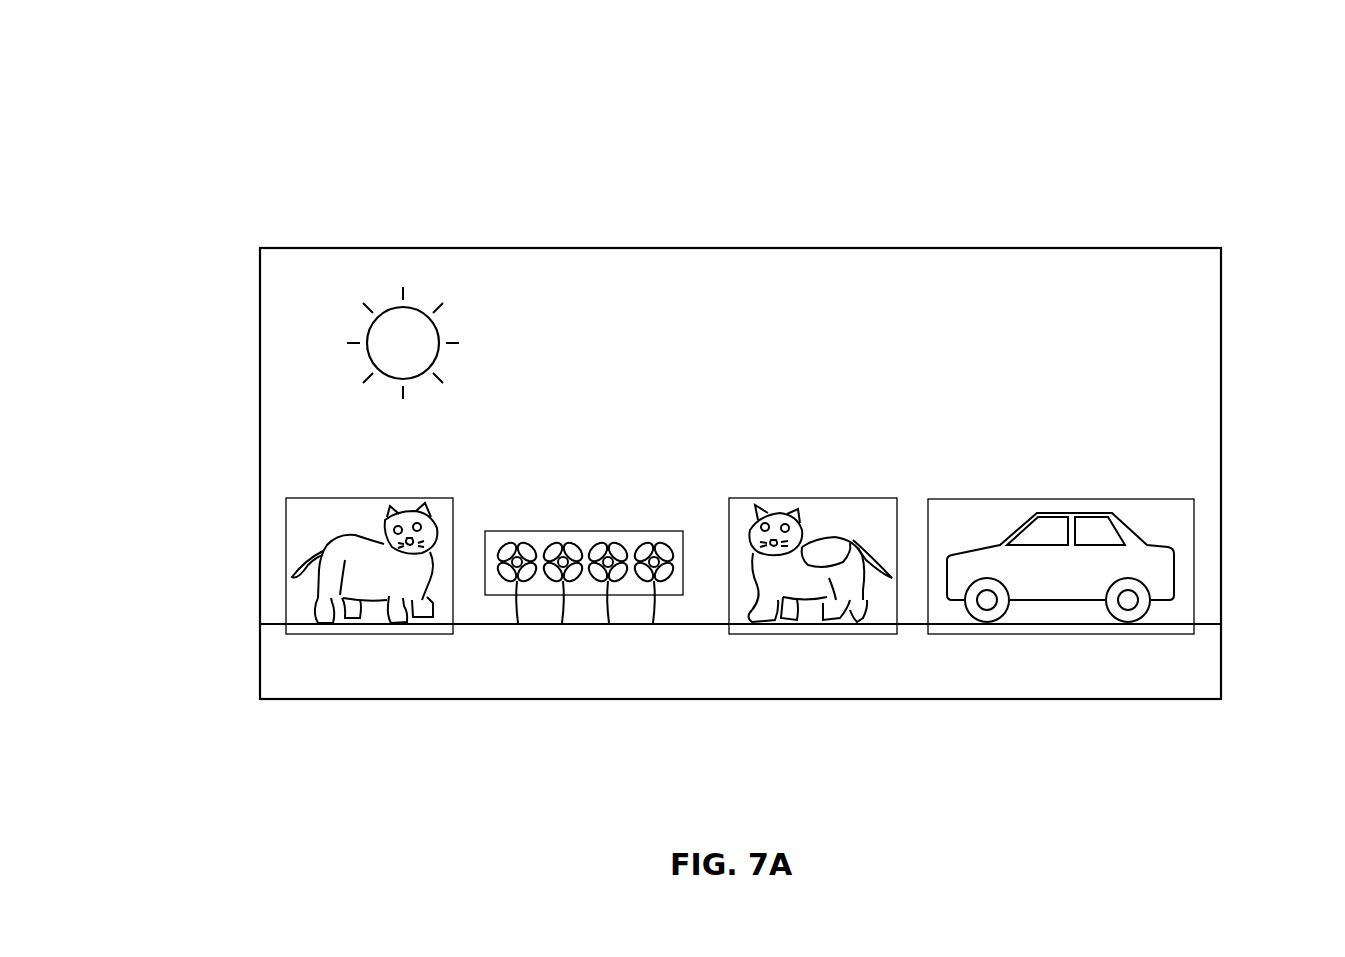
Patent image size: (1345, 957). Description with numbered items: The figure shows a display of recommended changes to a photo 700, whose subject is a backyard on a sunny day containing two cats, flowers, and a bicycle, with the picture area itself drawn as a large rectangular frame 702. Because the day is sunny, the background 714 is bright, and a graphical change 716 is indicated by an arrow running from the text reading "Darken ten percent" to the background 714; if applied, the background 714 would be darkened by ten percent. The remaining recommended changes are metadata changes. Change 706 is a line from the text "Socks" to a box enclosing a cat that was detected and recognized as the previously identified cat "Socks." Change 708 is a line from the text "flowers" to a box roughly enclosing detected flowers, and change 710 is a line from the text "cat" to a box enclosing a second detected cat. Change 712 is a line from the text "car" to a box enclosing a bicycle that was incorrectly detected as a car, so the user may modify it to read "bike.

The photo 700 is at (1223, 93).
The display screen / image 702 is at (1222, 660).
The change 706 is at (284, 567).
The change 708 is at (595, 597).
The change 710 is at (808, 634).
The change 712 is at (985, 498).
The background 714 is at (1207, 383).
The change 716 is at (740, 272).